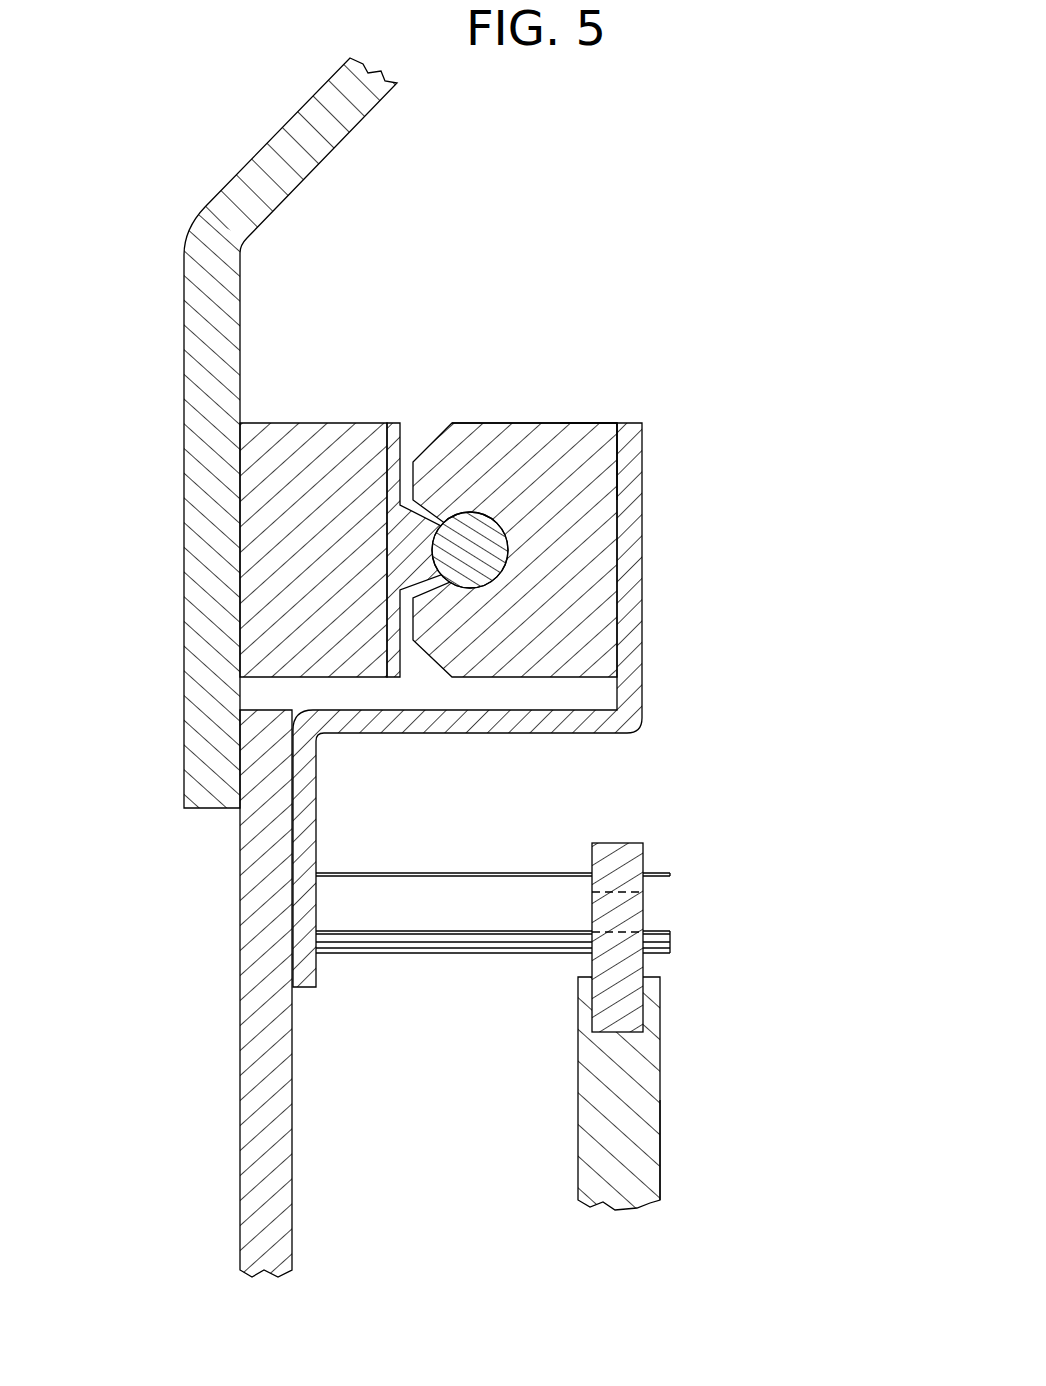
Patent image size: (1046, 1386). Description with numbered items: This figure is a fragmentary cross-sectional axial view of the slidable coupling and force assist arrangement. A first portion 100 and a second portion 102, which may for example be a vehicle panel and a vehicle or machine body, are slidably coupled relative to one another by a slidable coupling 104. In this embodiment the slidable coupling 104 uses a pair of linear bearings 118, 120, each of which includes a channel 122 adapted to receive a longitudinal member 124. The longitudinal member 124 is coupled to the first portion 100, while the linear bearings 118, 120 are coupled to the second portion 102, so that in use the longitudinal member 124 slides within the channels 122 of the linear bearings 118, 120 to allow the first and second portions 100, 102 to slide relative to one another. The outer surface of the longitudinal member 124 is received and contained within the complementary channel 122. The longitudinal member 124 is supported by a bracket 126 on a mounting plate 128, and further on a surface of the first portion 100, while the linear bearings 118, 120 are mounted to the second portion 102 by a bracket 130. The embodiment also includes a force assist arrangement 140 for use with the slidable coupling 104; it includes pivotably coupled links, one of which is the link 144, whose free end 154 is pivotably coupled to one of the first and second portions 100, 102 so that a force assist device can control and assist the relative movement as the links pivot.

The first portion 100 is at (263, 147).
The second portion 102 is at (242, 1128).
The slidable coupling 104 is at (497, 372).
The linear bearing 118 is at (533, 423).
The linear bearing 120 is at (587, 423).
The channel 122 is at (480, 583).
The longitudinal member 124 is at (457, 530).
The bracket 126 is at (399, 423).
The mounting plate 128 is at (267, 423).
The bracket 130 is at (643, 712).
The force assist arrangement 140 is at (692, 1030).
The link 144 is at (660, 1148).
The free end 154 is at (643, 873).